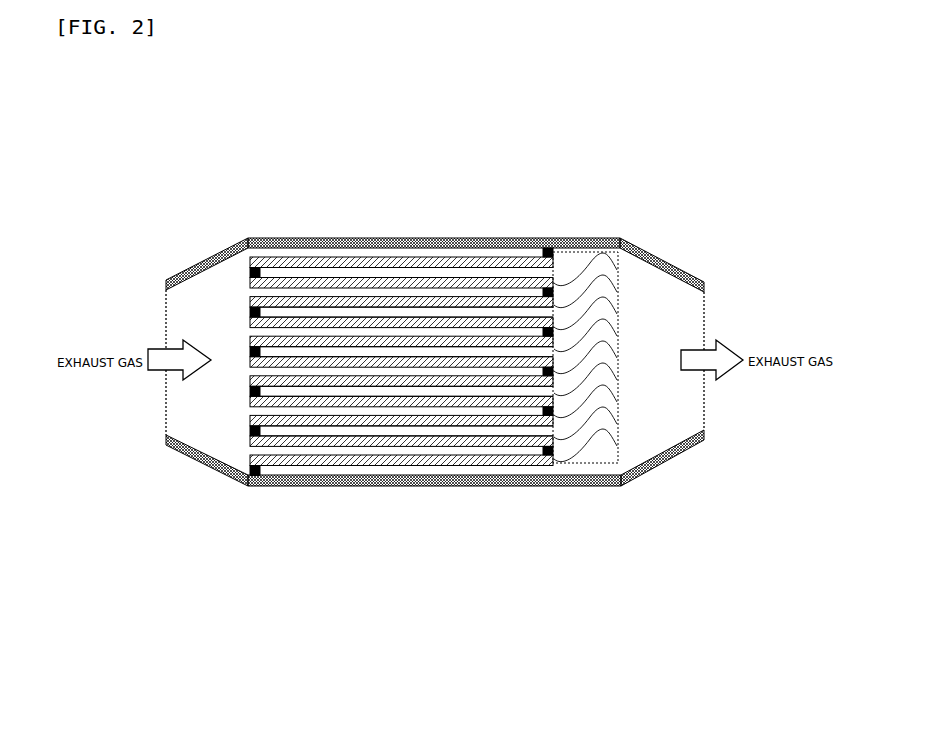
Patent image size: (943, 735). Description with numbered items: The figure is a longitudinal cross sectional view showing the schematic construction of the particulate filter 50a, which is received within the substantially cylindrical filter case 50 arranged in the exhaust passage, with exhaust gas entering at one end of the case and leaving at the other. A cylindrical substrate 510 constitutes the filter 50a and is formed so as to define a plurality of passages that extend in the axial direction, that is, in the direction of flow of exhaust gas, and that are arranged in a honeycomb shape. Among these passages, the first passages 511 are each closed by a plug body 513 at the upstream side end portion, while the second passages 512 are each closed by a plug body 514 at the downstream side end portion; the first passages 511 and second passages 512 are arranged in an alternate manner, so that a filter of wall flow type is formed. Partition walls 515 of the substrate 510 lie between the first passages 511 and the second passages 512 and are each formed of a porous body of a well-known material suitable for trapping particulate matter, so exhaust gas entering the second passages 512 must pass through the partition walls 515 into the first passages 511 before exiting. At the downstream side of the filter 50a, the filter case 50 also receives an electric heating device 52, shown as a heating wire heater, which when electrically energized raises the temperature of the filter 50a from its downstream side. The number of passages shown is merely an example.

The filter case 50 is at (651, 253).
The particulate filter 50a is at (199, 320).
The electric heating device 52 is at (584, 464).
The substrate 510 is at (371, 379).
The first passages 511 is at (543, 273).
The second passages 512 is at (250, 412).
The plug body 513 is at (250, 313).
The plug body 514 is at (543, 292).
The partition walls 515 is at (470, 465).